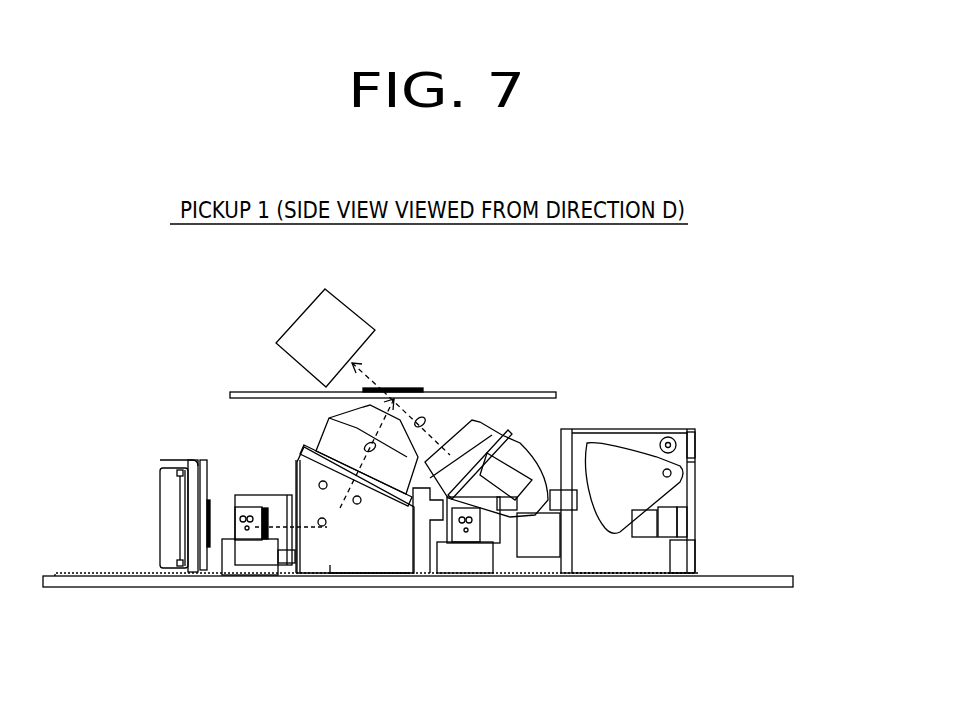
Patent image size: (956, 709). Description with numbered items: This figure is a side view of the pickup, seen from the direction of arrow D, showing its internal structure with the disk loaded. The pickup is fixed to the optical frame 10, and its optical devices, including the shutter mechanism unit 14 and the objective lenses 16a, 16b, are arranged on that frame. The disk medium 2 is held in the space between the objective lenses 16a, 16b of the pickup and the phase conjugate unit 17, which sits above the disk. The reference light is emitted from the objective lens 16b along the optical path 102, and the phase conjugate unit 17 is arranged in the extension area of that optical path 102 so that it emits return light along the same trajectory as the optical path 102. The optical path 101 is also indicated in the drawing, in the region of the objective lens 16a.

The disk medium 2 is at (530, 391).
The optical frame 10 is at (123, 580).
The shutter mechanism unit 14 is at (688, 494).
The objective lens 16a is at (390, 467).
The objective lens 16b is at (480, 440).
The phase conjugate unit 17 is at (352, 311).
The optical axis of first objective lens 101 is at (329, 418).
The optical path 102 is at (423, 417).